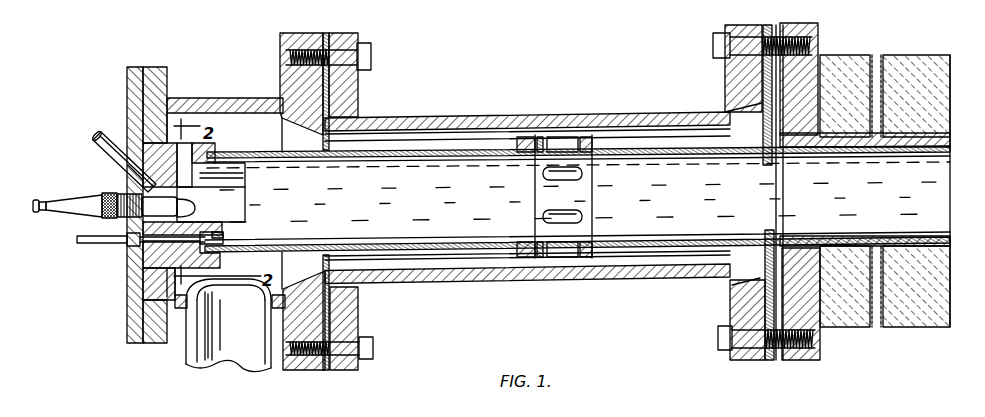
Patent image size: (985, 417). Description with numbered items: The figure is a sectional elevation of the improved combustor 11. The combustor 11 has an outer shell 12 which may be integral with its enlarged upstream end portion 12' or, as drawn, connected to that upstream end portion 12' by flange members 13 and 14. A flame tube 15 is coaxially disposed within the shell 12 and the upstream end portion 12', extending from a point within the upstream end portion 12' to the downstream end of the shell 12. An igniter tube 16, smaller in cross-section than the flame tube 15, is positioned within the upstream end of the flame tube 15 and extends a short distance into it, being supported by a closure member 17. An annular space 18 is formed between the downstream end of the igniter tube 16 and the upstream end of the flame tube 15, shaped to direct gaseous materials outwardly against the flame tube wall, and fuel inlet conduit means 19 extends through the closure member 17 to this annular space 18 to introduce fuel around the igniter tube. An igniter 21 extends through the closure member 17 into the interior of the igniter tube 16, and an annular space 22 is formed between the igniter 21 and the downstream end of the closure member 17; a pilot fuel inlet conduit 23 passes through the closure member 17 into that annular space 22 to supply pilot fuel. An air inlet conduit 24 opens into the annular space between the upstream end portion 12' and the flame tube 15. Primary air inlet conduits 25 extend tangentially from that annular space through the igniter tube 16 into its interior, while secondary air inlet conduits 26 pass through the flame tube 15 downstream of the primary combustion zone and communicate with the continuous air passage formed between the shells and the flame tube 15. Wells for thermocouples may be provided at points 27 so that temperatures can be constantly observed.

The combustor 11 is at (594, 106).
The outer shell 12 is at (527, 180).
The upstream end portion 12' is at (226, 186).
The flange member 13 is at (282, 42).
The flange member 14 is at (359, 90).
The flame tube 15 is at (398, 243).
The igniter tube 16 is at (247, 210).
The closure member 17 is at (126, 87).
The annular space 18 is at (237, 235).
The fuel inlet conduit means 19 is at (97, 246).
The igniter 21 is at (58, 208).
The annular space 22 is at (128, 177).
The pilot fuel inlet conduit 23 is at (99, 150).
The air inlet conduit 24 is at (230, 358).
The primary air inlet conduits 25 is at (192, 188).
The secondary air inlet conduits 26 is at (580, 224).
The thermocouple points 27 is at (878, 56).